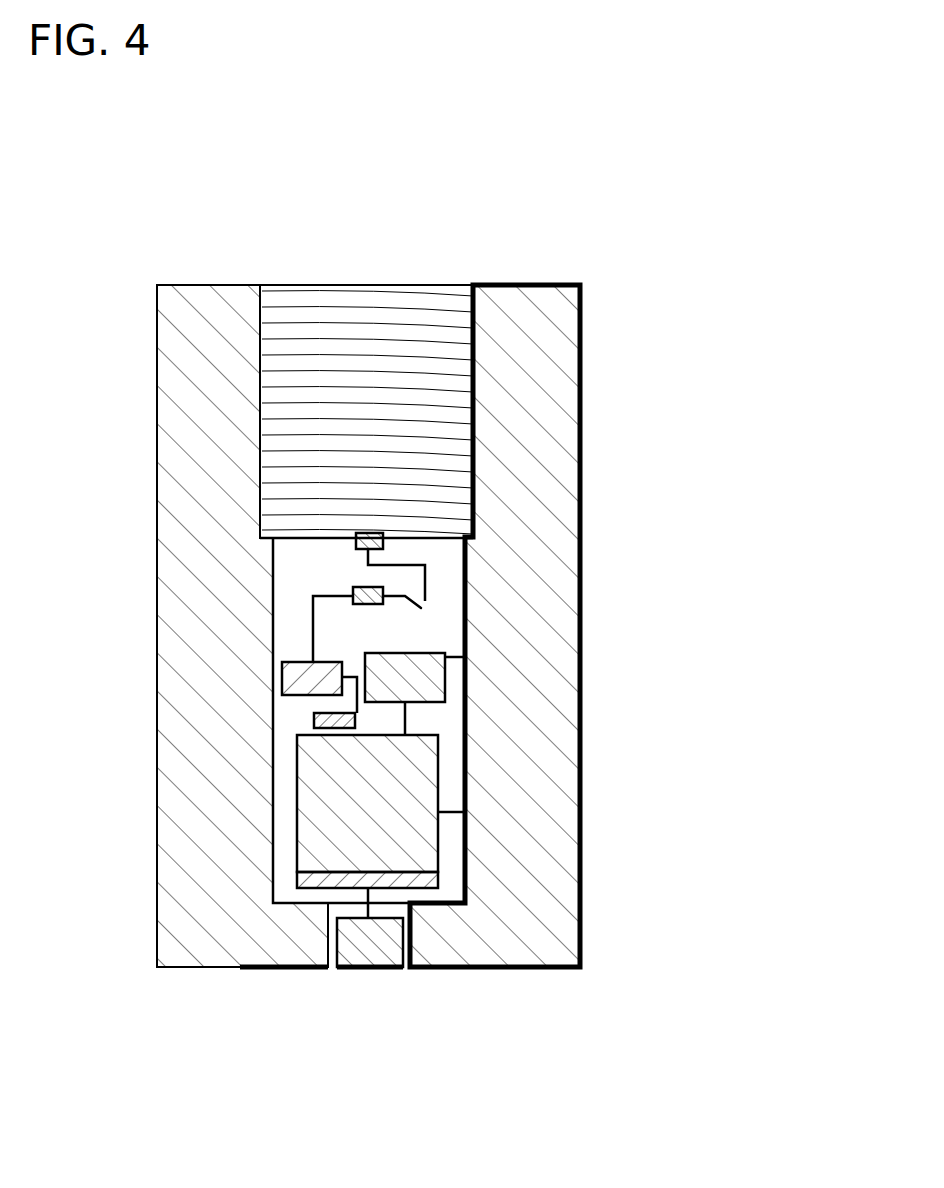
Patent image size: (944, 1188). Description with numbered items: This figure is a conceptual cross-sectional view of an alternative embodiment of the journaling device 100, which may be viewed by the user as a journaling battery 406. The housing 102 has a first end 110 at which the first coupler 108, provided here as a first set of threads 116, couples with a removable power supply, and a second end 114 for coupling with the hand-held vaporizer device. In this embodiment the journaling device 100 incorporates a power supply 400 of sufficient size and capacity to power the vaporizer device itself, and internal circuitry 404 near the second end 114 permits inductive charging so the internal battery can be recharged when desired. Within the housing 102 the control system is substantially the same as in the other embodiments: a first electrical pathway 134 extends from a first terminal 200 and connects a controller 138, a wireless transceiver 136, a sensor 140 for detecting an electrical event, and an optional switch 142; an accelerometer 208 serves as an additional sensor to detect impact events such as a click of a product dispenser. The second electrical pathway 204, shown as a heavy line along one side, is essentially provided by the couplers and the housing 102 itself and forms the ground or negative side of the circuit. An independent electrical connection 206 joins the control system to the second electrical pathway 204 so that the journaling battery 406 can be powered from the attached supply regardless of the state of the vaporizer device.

The journaling device 100 is at (368, 568).
The journaling battery 406 is at (463, 250).
The housing 102 is at (157, 398).
The first coupler 108 is at (362, 390).
The first set of threads 116 is at (307, 312).
The first end 110 is at (200, 285).
The second end 114 is at (185, 968).
The first electrical pathway 134 is at (313, 637).
The wireless transceiver 136 is at (300, 682).
The controller 138 is at (435, 678).
The sensor 140 is at (353, 587).
The switch 142 is at (425, 612).
The first terminal 200 is at (355, 542).
The second electrical pathway 204 is at (586, 505).
The independent electrical connection 206 is at (453, 813).
The accelerometer 208 is at (335, 722).
The power supply 400 is at (420, 775).
The internal circuitry 404 is at (375, 955).